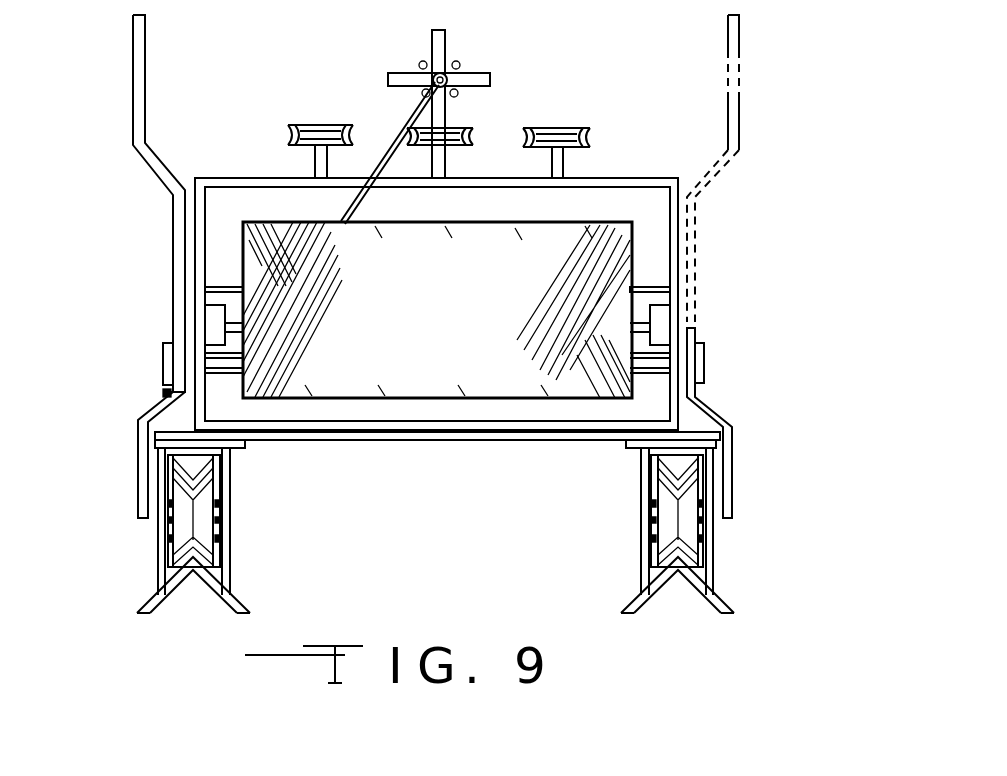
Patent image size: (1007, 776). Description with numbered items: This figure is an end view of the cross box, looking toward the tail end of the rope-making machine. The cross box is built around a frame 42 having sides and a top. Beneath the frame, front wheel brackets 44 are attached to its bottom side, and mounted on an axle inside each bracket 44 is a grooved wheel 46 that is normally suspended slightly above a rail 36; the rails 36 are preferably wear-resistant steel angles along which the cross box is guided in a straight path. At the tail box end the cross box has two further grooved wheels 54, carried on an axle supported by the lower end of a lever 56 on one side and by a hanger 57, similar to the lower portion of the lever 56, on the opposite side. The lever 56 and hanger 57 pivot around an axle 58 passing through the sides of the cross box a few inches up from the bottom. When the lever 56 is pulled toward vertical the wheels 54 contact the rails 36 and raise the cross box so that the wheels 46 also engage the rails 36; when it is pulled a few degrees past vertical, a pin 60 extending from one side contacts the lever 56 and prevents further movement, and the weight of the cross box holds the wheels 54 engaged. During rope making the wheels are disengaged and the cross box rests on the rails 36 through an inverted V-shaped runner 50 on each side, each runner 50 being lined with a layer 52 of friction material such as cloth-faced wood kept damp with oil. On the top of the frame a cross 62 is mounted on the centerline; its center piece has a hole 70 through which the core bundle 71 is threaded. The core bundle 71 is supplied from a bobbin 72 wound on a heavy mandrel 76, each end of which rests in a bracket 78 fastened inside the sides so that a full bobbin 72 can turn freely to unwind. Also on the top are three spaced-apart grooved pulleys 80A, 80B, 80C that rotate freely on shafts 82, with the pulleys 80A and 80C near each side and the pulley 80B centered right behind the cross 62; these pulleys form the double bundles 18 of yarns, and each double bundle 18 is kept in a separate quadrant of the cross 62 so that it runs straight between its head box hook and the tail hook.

The double bundle 18 is at (428, 84).
The rail 36 is at (153, 600).
The frame 42 is at (705, 420).
The front wheel bracket 44 is at (233, 495).
The wheel 46 is at (180, 540).
The runner 50 is at (227, 563).
The friction material layer 52 is at (222, 582).
The wheel 54 is at (222, 462).
The lever 56 is at (133, 52).
The hanger 57 is at (733, 470).
The axle 58 is at (220, 367).
The pin 60 is at (157, 397).
The cross 62 is at (452, 30).
The hole 70 is at (430, 60).
The core bundle 71 is at (388, 147).
The bobbin 72 is at (450, 316).
The mandrel 76 is at (222, 290).
The bracket 78 is at (213, 320).
The pulley 80A is at (582, 128).
The pulley 80B is at (477, 126).
The pulley 80C is at (302, 123).
The shaft 82 is at (307, 163).